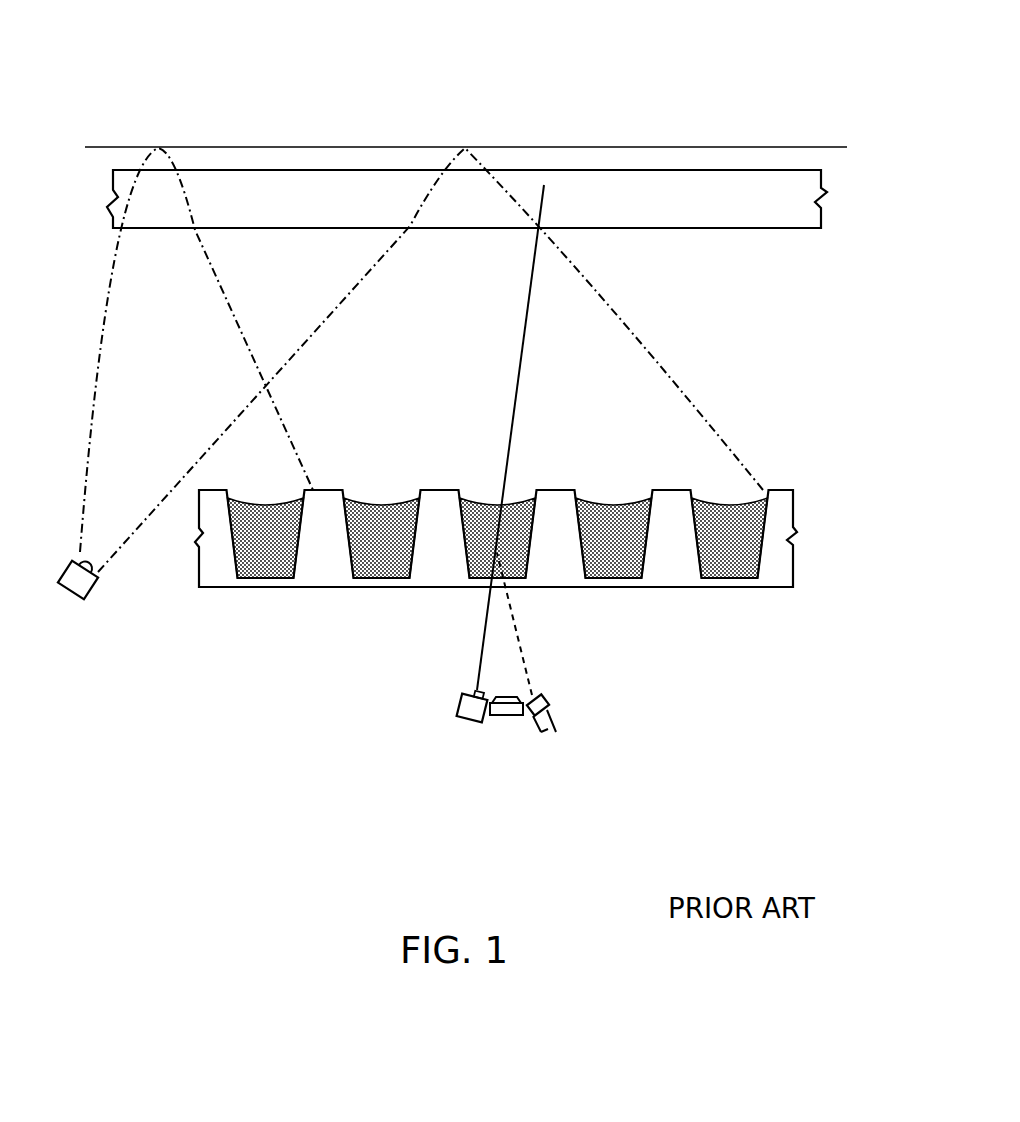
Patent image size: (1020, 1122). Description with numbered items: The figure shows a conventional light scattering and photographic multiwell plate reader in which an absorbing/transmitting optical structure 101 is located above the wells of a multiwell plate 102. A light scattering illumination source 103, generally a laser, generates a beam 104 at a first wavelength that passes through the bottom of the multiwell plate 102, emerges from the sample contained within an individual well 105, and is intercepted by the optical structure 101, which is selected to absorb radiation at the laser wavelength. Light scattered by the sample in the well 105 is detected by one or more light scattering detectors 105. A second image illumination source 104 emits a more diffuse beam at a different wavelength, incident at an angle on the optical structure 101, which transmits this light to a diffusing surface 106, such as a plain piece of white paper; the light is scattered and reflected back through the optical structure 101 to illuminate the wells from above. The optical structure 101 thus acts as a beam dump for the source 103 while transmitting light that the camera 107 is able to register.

The absorbing/transmitting optical structure 101 is at (607, 198).
The multiwell plate 102 is at (320, 563).
The light scattering illumination source 103 is at (445, 722).
The image illumination source 104 is at (64, 599).
The well 105 is at (477, 494).
The diffusing surface 106 is at (393, 140).
The camera 107 is at (510, 720).